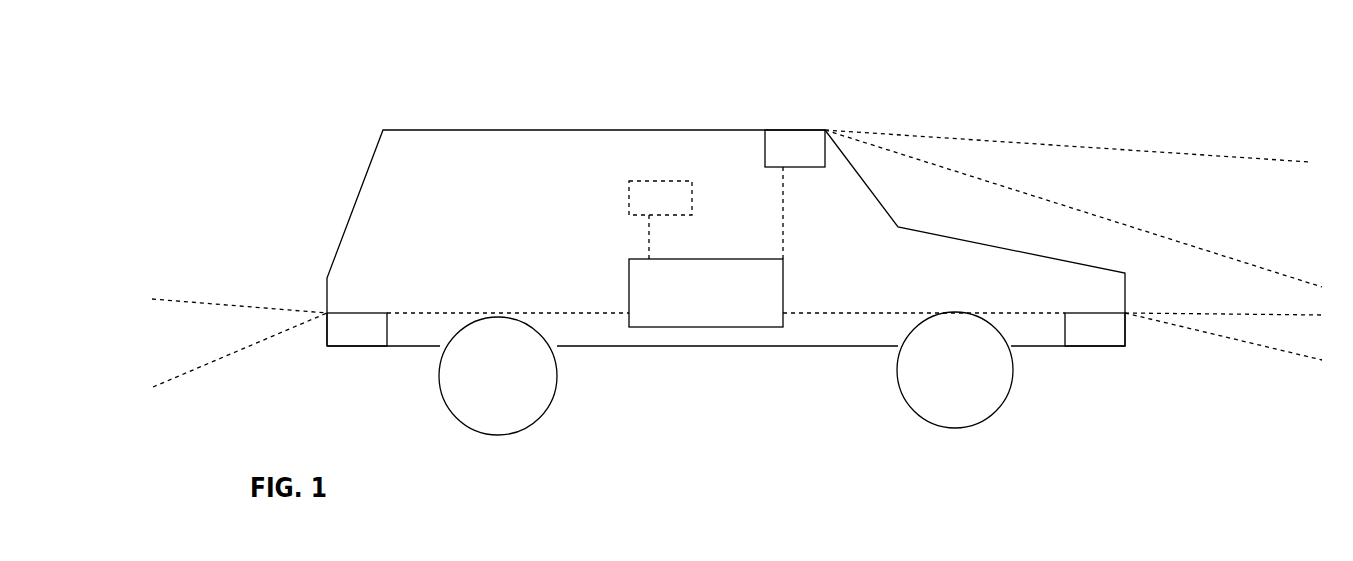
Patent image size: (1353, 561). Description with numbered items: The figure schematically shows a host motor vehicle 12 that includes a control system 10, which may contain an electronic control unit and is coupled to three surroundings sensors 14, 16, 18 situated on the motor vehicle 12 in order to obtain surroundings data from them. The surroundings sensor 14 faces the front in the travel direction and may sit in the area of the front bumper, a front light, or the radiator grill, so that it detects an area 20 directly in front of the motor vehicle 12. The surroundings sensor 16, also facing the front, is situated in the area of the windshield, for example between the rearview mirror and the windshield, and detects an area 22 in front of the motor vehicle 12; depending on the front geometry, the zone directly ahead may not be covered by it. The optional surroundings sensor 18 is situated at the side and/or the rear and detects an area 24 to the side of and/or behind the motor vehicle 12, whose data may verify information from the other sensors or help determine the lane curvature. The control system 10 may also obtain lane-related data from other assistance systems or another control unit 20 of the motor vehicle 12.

The control system 10 is at (706, 293).
The motor vehicle 12 is at (427, 131).
The surroundings sensor 14 is at (1095, 329).
The surroundings sensor 16 is at (795, 194).
The surroundings sensor 18 is at (357, 329).
The area in front of the motor vehicle 20 is at (975, 270).
The area in front of the motor vehicle 22 is at (1073, 208).
The area to the side of and/or behind the motor vehicle 24 is at (239, 343).